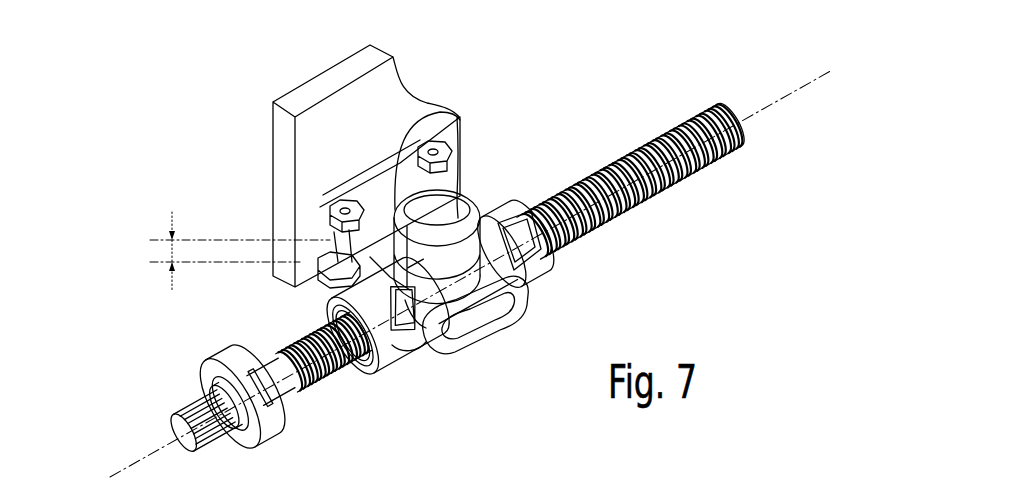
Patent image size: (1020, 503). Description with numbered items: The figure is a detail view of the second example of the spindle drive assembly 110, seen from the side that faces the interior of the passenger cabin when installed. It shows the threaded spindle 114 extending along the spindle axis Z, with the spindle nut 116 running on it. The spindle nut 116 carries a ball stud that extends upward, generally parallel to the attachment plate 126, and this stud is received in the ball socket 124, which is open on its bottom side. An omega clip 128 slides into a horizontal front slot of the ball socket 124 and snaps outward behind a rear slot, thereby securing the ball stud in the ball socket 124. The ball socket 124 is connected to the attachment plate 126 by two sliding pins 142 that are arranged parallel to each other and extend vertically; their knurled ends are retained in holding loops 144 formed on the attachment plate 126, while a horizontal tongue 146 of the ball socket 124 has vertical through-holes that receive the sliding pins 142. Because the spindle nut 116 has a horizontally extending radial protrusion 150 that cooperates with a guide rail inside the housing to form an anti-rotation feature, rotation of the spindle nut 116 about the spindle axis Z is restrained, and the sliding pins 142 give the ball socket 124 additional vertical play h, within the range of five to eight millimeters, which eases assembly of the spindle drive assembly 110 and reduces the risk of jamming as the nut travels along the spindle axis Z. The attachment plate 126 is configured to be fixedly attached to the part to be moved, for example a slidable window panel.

The spindle drive assembly 110 is at (200, 107).
The spindle 114 is at (613, 223).
The spindle nut 116 is at (413, 353).
The ball socket 124 is at (477, 205).
The attachment plate 126 is at (333, 120).
The omega clip 128 is at (500, 281).
The sliding pins 142 is at (407, 360).
The holding loops 144 is at (343, 210).
The horizontal tongue 146 is at (447, 112).
The radial protrusion 150 is at (483, 347).
The spindle axis Z is at (160, 452).
The vertical play h is at (172, 249).